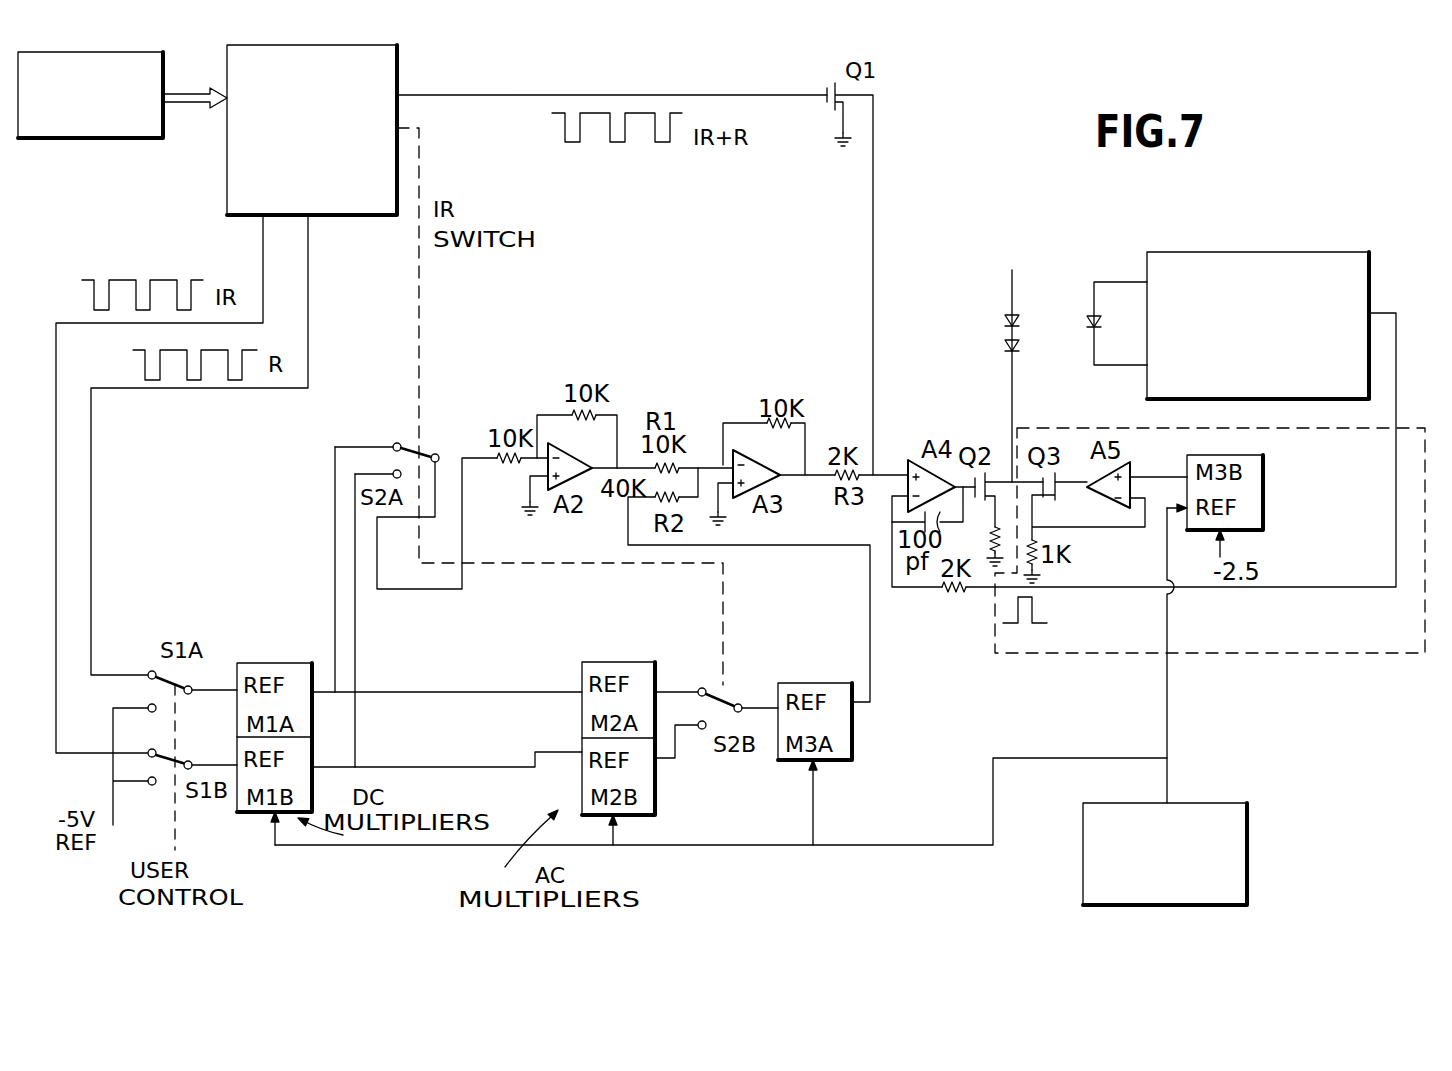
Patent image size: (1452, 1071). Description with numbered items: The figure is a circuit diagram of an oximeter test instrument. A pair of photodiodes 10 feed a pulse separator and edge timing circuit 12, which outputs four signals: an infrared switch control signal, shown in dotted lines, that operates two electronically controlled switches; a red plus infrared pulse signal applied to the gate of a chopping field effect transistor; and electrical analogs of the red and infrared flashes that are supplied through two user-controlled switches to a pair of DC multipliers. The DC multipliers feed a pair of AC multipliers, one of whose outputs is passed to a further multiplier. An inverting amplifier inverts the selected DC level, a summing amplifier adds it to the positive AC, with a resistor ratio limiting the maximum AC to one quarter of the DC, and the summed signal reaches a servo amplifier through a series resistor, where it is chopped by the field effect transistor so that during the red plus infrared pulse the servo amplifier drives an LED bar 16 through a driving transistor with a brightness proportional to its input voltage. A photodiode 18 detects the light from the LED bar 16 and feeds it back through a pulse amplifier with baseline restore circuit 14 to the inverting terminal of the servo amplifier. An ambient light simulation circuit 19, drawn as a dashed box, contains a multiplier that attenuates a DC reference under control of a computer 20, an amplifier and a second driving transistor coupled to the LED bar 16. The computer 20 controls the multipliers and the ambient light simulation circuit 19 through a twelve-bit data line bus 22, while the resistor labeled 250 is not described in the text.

The photodiodes 10 is at (72, 142).
The pulse separator and edge timing circuit 12 is at (225, 150).
The pulse amplifier with baseline restore circuit 14 is at (1322, 252).
The LED bar 16 is at (976, 376).
The photodiode 18 is at (1088, 322).
The ambient light simulation circuit 19 is at (1333, 655).
The computer 20 is at (1220, 800).
The 12-bit data line bus 22 is at (702, 846).
The 2K resistor 250 is at (981, 540).